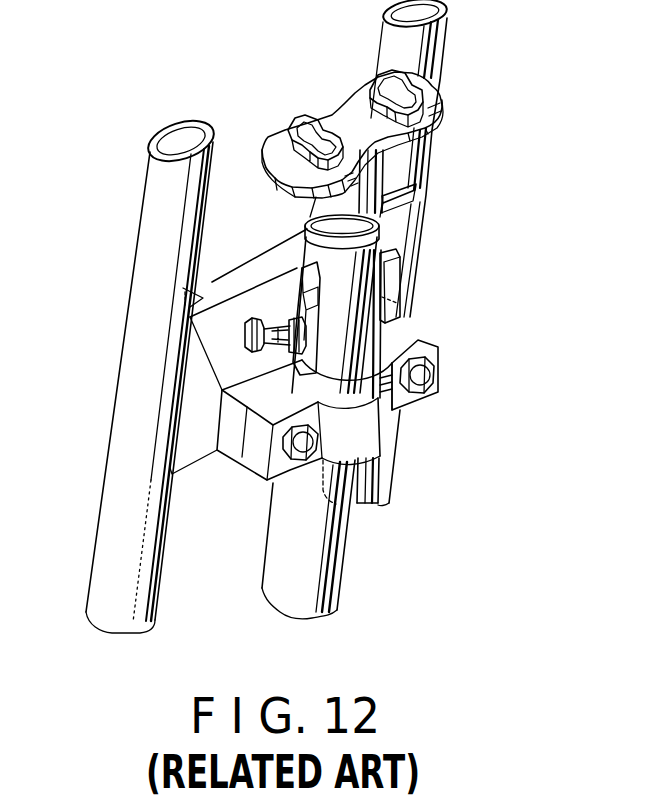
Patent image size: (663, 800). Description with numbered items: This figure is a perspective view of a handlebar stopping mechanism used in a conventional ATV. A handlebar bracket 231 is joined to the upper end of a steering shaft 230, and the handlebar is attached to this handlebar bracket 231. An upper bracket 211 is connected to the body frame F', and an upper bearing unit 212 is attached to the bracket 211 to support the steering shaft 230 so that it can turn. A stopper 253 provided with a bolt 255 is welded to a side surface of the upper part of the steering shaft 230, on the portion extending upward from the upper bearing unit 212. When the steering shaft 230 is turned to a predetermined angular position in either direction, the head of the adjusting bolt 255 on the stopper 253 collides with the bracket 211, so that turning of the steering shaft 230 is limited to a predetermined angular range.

The body frame F' is at (297, 316).
The upper bracket 211 is at (400, 222).
The upper bearing unit 212 is at (393, 437).
The steering shaft 230 is at (356, 557).
The handlebar bracket 231 is at (355, 115).
The stopper 253 is at (297, 302).
The bolt 255 is at (245, 333).